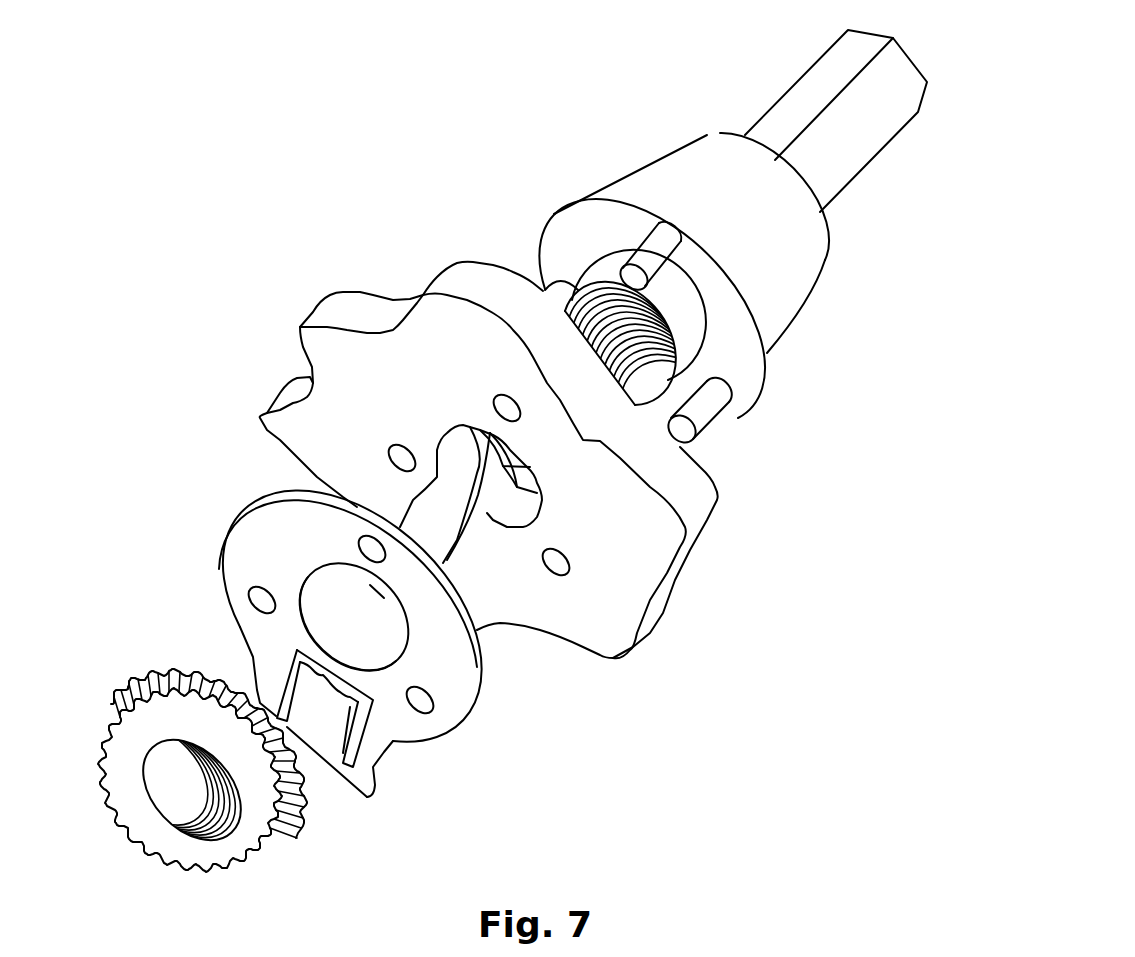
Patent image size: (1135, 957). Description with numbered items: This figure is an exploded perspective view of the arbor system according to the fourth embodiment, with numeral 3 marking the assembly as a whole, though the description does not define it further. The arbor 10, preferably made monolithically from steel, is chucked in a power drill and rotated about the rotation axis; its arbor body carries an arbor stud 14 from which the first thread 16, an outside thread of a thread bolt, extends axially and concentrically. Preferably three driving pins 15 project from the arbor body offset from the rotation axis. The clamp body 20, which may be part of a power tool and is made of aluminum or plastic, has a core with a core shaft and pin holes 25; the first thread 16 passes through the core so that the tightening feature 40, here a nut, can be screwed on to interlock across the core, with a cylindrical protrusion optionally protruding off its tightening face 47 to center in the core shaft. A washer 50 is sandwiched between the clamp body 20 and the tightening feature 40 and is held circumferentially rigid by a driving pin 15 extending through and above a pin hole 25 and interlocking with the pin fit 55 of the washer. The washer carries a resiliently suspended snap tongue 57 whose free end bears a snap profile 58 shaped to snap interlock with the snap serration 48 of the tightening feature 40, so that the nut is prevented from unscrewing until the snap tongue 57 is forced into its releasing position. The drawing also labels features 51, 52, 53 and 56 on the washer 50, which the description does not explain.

The mounting assembly 3 is at (740, 727).
The arbor 10 is at (621, 137).
The arbor stud 14 is at (688, 323).
The driving pins 15 is at (723, 413).
The first thread 16 is at (642, 355).
The clamp body 20 is at (278, 302).
The pin hole 25 is at (557, 573).
The tightening feature 40 is at (97, 703).
The tightening face 47 is at (182, 662).
The snap serration 48 is at (283, 833).
The washer 50 is at (202, 513).
The plate body 51 is at (255, 515).
The tab 52 is at (393, 727).
The tab end 53 is at (315, 757).
The pin fit 55 is at (435, 710).
The central opening 56 is at (300, 583).
The snap tongue 57 is at (323, 715).
The snap profile 58 is at (320, 679).